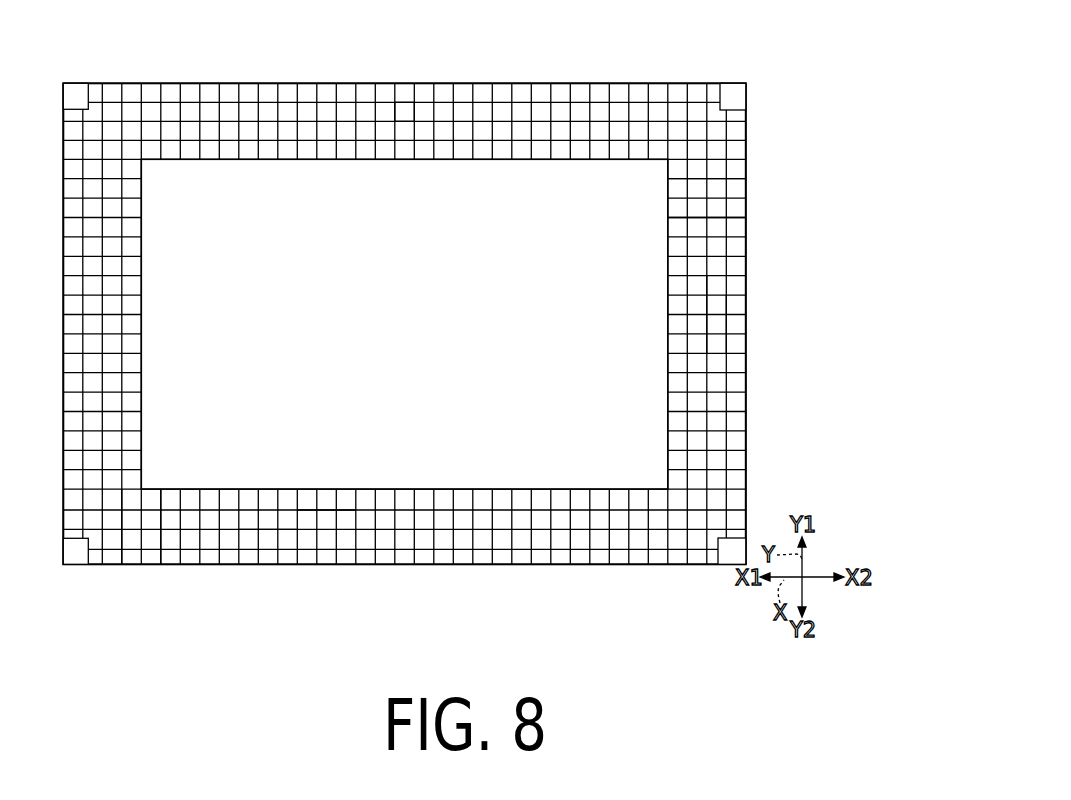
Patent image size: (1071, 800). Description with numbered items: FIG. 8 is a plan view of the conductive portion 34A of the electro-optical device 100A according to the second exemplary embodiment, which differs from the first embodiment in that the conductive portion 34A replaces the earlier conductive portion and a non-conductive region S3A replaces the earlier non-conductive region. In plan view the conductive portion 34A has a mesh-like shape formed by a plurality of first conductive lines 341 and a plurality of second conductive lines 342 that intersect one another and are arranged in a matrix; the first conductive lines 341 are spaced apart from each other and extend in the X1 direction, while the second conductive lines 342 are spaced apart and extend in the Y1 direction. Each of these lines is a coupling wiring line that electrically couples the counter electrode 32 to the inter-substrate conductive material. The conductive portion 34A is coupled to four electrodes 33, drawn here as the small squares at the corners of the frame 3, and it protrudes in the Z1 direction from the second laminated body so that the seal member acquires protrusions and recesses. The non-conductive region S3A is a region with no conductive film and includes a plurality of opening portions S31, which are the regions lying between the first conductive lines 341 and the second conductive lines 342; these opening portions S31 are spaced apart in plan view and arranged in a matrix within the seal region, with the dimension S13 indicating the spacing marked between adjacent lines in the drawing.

The electro-optical device 100A is at (460, 328).
The frame 3 is at (448, 333).
The counter electrode 32 is at (567, 495).
The electrode 33 is at (79, 98).
The conductive portion 34A is at (455, 570).
The first conductive line 341 is at (717, 298).
The second conductive line 342 is at (688, 167).
The non-conductive region S3A is at (403, 106).
The opening portion S31 is at (433, 109).
The mesh pitch S13 is at (716, 412).